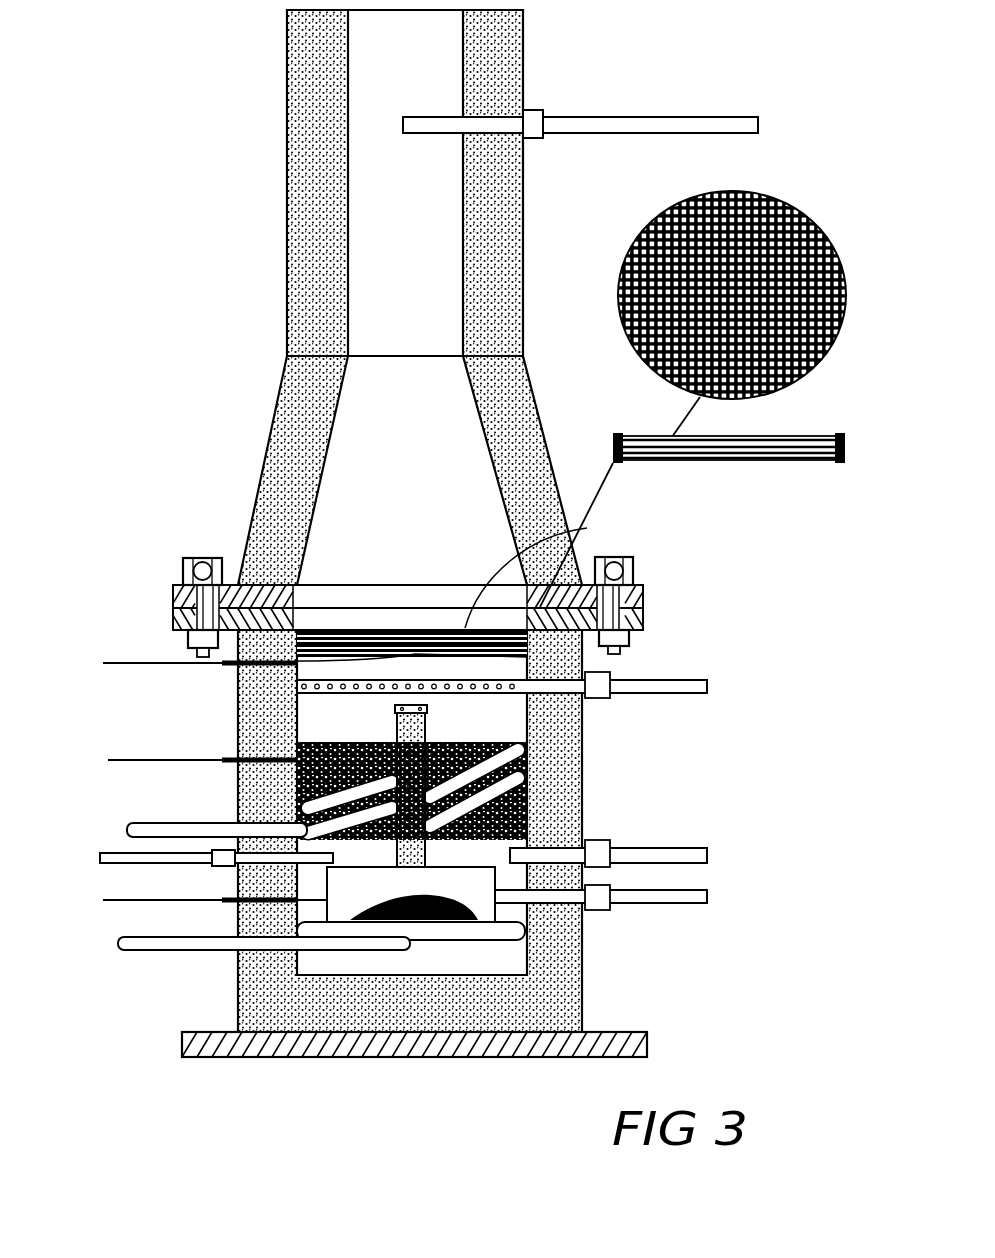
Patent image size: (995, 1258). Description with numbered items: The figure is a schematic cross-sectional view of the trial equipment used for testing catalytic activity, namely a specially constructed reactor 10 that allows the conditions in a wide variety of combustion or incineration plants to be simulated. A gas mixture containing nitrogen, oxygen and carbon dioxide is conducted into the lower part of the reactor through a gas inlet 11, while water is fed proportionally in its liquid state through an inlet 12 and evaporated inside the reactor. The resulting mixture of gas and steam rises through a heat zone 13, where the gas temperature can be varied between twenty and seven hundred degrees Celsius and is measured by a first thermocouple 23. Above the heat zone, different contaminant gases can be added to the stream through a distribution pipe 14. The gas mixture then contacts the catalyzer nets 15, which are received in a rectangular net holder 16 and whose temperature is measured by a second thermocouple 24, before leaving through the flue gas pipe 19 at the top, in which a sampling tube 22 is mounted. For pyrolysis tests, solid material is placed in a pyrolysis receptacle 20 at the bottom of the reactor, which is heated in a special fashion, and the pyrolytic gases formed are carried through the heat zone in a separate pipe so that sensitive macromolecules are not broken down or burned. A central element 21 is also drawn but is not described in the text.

The reactor 10 is at (118, 506).
The gas inlet 11 is at (708, 847).
The inlet 12 is at (117, 855).
The heat zone 13 is at (527, 792).
The distribution pipe 14 is at (677, 692).
The catalyzer nets 15 is at (587, 528).
The rectangular net holder 16 is at (845, 451).
The flue gas pipe 19 is at (305, 60).
The pyrolysis receptacle 20 is at (527, 917).
The support rod 21 is at (427, 716).
The sampling tube 22 is at (610, 128).
The first thermocouple 23 is at (205, 760).
The second thermocouple 24 is at (133, 663).